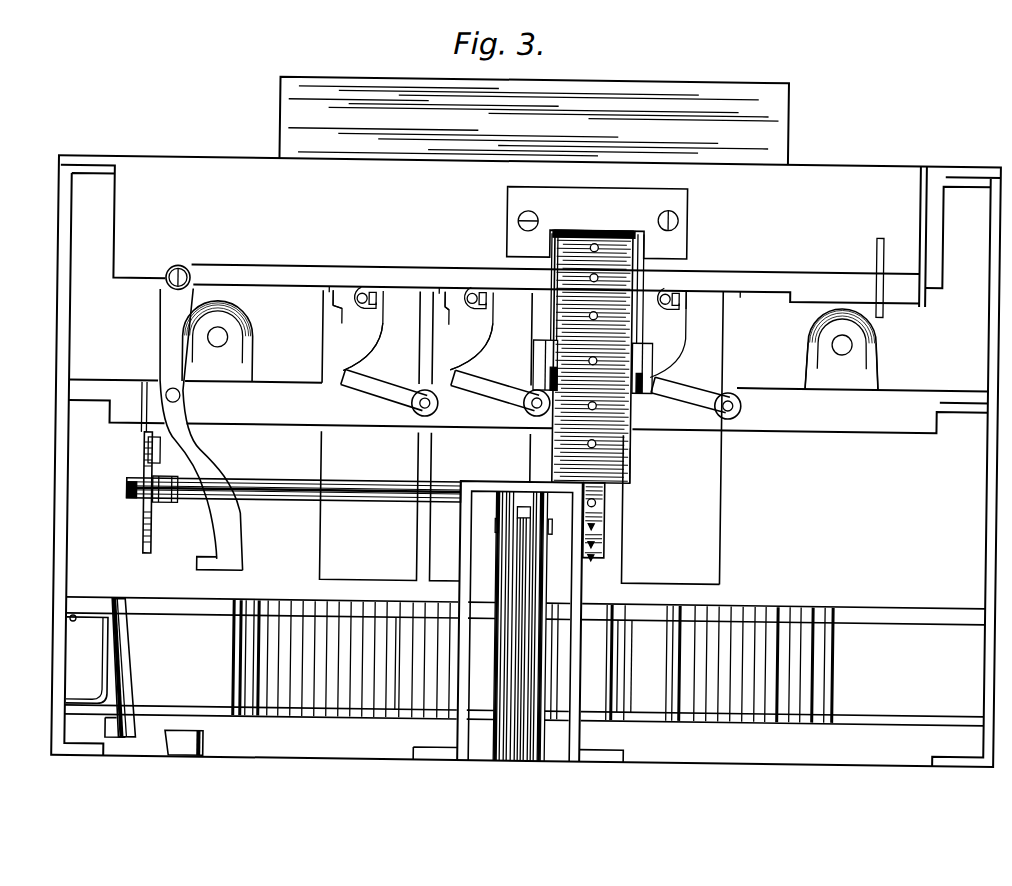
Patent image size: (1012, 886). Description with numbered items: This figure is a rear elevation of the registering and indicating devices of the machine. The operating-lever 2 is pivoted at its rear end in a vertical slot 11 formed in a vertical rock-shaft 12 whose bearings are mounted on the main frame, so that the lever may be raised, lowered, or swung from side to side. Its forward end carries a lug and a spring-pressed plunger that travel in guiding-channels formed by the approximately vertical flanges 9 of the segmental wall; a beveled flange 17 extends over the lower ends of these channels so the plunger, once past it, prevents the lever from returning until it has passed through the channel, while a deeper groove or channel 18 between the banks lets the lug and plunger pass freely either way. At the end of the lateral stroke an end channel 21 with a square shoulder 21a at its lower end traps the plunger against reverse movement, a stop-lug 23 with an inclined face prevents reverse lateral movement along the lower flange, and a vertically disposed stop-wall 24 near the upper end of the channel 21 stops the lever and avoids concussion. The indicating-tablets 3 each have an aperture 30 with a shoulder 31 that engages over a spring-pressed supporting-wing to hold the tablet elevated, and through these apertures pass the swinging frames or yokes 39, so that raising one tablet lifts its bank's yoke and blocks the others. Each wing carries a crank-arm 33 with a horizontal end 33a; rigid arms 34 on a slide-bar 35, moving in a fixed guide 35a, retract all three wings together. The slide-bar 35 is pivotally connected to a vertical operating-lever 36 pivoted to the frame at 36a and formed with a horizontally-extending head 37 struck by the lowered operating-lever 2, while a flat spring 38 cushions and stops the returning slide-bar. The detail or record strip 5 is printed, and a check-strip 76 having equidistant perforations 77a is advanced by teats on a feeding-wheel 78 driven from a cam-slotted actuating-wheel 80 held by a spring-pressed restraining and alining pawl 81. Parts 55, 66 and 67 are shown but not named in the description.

The operating-lever 2 is at (527, 525).
The indicating-tablets 3 is at (526, 461).
The detail or record strip 5 is at (883, 341).
The vertical flanges 9 is at (296, 594).
The vertical slot 11 is at (529, 498).
The vertical rock-shaft 12 is at (522, 748).
The beveled flange 17 is at (649, 705).
The deeper groove or channel 18 is at (404, 695).
The end groove or channel 21 is at (136, 668).
The square shoulder 21a is at (139, 708).
The stop-lug 23 is at (200, 738).
The stop-wall 24 is at (112, 667).
The aperture 30 is at (415, 346).
The shoulder 31 is at (334, 319).
The crank-arm 33 is at (354, 286).
The horizontal end 33a is at (334, 288).
The rigid arms 34 is at (708, 258).
The slide-bar 35 is at (262, 264).
The fixed guide 35a is at (880, 239).
The vertical operating-lever 36 is at (164, 328).
The pivot 36a is at (188, 393).
The horizontally-extending head 37 is at (215, 559).
The flat spring 38 is at (923, 201).
The frames or yokes 39 is at (357, 380).
The cover box 55 is at (760, 148).
The cam 66 is at (842, 350).
The cam 67 is at (217, 340).
The check-strip 76 is at (593, 357).
The perforations 77a is at (638, 439).
The feeding-wheel 78 is at (612, 494).
The actuating-wheel 80 is at (157, 519).
The restraining and alining pawl 81 is at (156, 478).